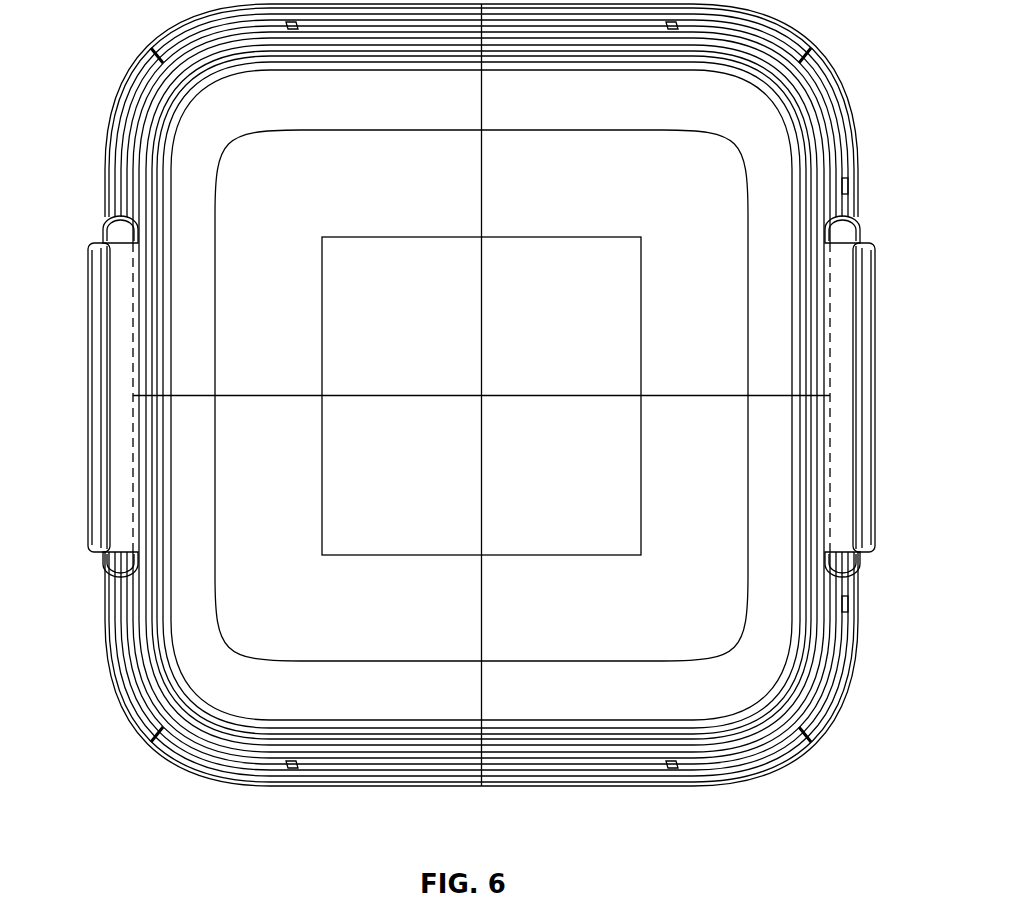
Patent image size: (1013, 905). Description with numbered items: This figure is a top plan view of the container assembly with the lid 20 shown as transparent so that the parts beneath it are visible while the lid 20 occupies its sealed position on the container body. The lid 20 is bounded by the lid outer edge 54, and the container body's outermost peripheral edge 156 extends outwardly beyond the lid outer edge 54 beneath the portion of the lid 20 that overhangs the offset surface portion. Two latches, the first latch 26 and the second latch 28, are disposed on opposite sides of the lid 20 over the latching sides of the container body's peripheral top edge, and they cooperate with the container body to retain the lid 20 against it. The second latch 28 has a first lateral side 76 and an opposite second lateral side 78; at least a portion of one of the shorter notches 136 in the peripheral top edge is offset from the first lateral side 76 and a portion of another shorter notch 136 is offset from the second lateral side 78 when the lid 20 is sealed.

The lid 20 is at (195, 690).
The first latch 26 is at (90, 412).
The second latch 28 is at (870, 392).
The lid outer edge 54 is at (282, 780).
The first lateral side 76 is at (862, 550).
The second lateral side 78 is at (862, 245).
The shorter notches 136 is at (852, 193).
The outermost peripheral edge 156 is at (352, 786).